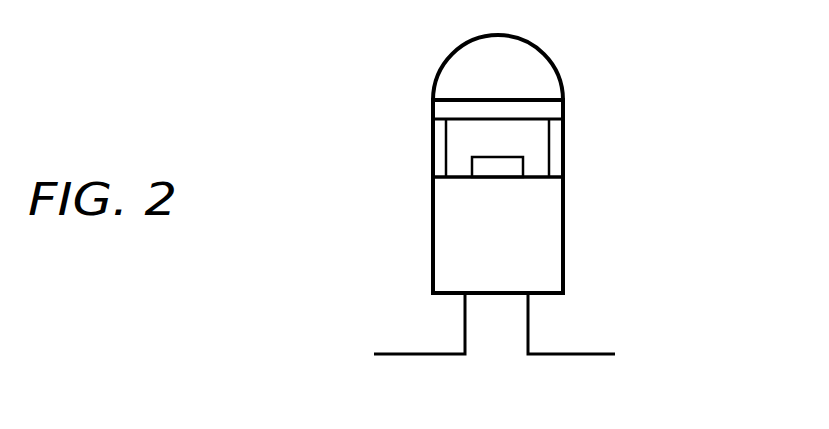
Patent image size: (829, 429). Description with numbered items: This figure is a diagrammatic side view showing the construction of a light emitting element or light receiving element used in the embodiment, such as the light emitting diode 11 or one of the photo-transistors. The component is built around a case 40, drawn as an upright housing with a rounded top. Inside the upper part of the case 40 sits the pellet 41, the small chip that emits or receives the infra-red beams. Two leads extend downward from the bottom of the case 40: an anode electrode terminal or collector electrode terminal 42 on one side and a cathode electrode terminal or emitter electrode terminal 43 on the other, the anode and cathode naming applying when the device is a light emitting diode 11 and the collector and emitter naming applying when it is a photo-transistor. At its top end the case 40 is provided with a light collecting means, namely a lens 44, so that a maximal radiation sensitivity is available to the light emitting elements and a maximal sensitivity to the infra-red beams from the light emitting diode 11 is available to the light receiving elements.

The case 40 is at (563, 250).
The pellet 41 is at (485, 174).
The anode electrode terminal or collector electrode terminal 42 is at (582, 352).
The cathode electrode terminal or emitter electrode terminal 43 is at (410, 352).
The lens 44 is at (548, 52).
The light emitting diode 11 is at (563, 223).